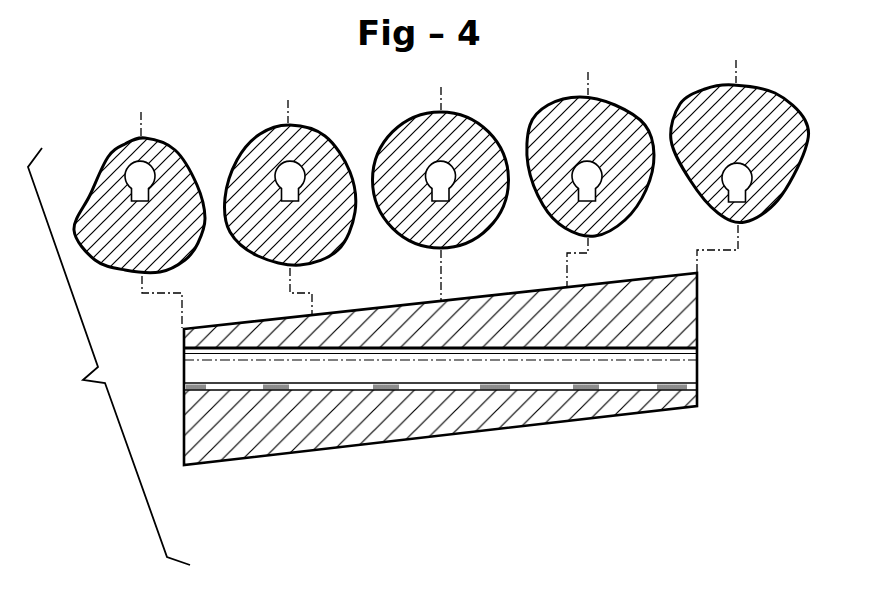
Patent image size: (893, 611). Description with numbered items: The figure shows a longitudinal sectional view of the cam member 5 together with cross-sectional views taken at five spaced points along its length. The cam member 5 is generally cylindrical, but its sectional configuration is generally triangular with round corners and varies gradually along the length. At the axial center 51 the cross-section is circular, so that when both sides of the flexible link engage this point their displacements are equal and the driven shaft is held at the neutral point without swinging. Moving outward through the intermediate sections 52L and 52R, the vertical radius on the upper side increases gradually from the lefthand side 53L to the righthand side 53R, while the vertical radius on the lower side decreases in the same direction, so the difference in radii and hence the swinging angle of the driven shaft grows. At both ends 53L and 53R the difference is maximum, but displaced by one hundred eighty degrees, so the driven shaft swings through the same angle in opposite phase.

The cam member 5 is at (398, 441).
The axial center 51 is at (440, 441).
The left intermediate cam 52L is at (313, 453).
The right intermediate cam 52R is at (567, 425).
The lefthand side 53L is at (184, 467).
The righthand side 53R is at (697, 408).